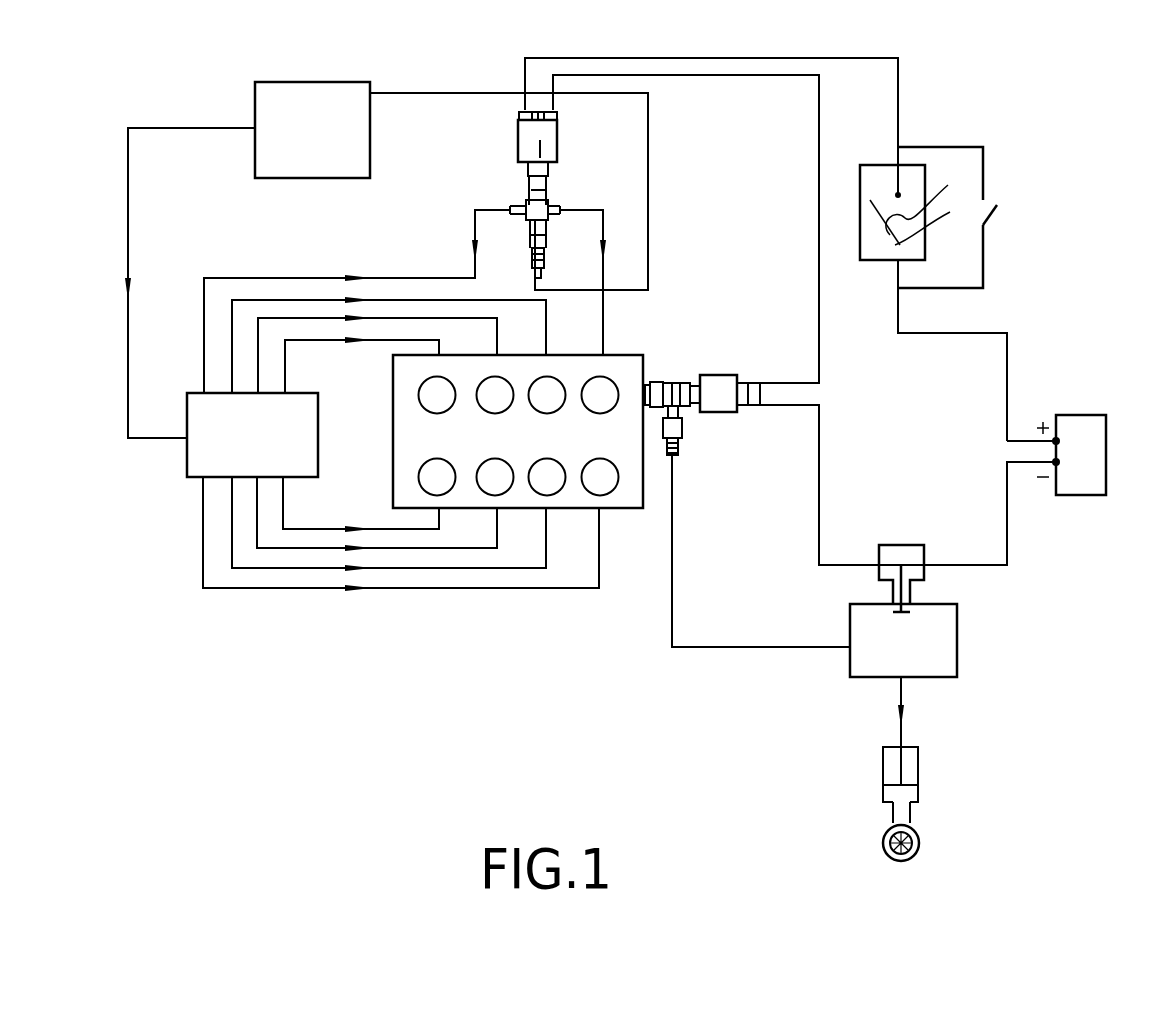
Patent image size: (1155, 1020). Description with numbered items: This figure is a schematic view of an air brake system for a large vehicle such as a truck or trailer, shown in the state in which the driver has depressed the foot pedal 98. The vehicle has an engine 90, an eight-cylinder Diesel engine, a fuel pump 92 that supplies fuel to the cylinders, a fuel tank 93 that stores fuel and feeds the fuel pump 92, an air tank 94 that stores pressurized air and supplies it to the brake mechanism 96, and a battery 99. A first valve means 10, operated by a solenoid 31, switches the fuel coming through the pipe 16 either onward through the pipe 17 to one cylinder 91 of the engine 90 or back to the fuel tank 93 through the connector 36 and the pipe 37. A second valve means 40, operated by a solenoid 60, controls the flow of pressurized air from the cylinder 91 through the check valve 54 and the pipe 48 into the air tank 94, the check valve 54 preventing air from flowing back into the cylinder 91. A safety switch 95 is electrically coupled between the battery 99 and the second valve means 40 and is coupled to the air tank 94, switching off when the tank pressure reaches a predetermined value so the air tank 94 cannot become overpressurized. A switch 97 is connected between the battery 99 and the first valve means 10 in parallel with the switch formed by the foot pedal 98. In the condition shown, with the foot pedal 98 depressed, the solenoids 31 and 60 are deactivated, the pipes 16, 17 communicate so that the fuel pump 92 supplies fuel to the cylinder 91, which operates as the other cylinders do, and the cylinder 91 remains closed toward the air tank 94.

The first valve means 10 is at (541, 195).
The pipe 16 is at (472, 232).
The pipe 17 is at (608, 224).
The solenoid 31 is at (520, 150).
The connector 36 is at (542, 255).
The pipe 37 is at (648, 250).
The second valve means 40 is at (702, 412).
The pipe 48 is at (672, 540).
The check valve 54 is at (683, 425).
The solenoid 60 is at (722, 400).
The engine 90 is at (536, 412).
The cylinder 91 is at (600, 388).
The fuel pump 92 is at (196, 398).
The fuel tank 93 is at (315, 178).
The air tank 94 is at (948, 648).
The switch 95 is at (924, 552).
The brake mechanism 96 is at (908, 768).
The switch 97 is at (986, 245).
The foot pedal 98 is at (888, 262).
The battery 99 is at (1098, 452).